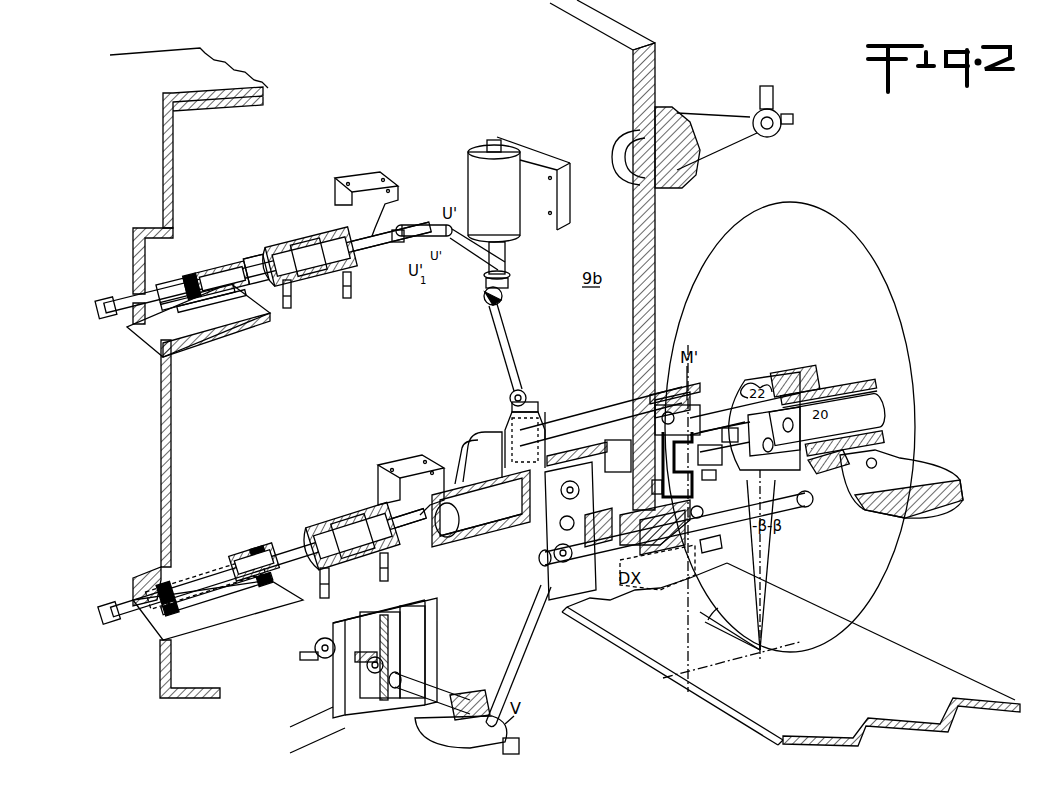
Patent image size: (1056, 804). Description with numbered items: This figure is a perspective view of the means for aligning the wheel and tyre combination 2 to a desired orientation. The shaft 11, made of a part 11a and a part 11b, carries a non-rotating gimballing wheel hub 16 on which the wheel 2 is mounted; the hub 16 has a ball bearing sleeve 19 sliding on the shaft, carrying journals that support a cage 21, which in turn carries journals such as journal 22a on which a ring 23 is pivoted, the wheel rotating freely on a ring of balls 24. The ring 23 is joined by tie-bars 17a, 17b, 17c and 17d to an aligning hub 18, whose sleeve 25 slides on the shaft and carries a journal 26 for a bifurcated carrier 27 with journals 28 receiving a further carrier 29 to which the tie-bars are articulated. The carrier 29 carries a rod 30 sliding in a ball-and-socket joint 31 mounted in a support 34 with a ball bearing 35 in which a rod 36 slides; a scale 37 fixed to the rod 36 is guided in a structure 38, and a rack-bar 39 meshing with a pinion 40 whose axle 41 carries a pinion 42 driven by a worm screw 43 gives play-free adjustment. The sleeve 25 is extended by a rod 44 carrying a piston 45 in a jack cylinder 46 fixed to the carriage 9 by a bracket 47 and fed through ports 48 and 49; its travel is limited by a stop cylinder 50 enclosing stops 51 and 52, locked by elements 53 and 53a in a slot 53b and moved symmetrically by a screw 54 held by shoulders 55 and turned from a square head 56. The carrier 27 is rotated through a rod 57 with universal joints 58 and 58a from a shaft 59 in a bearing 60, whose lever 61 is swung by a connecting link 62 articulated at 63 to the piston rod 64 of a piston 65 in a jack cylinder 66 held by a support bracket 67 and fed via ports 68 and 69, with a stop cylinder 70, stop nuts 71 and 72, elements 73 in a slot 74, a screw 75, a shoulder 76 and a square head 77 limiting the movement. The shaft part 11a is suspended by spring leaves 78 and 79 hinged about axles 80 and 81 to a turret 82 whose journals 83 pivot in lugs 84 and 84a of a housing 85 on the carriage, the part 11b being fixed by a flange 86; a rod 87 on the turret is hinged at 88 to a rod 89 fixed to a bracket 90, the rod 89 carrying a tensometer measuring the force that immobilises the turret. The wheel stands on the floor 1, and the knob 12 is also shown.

The floor 1 is at (922, 672).
The wheel and tyre combination 2 is at (892, 574).
The carriage 9 is at (172, 424).
The shaft 11 is at (455, 545).
The shaft part 11a is at (872, 400).
The shaft part 11b is at (577, 447).
The knob 12 is at (672, 160).
The wheel hub 16 is at (800, 362).
The rod or tie-bar 17a is at (588, 418).
The rod or tie-bar 17b is at (615, 452).
The rod or tie-bar 17c is at (660, 588).
The rod or tie-bar 17d is at (598, 518).
The aligning hub 18 is at (462, 470).
The ball bearing sleeve 19 is at (870, 370).
The cage 21 is at (884, 428).
The journal 22a is at (870, 448).
The ring 23 is at (834, 368).
The ring of balls 24 is at (866, 462).
The ball bearing sleeve 25 is at (482, 545).
The journal 26 is at (508, 440).
The bifurcated carrier 27 is at (540, 440).
The journal 28 is at (565, 521).
The bifurcated carrier 29 is at (560, 585).
The rod 30 is at (500, 636).
The ball-and-socket joint 31 is at (517, 745).
The support 34 is at (440, 727).
The ball bearing 35 is at (466, 698).
The rod 36 is at (420, 688).
The scale 37 is at (405, 655).
The structure 38 is at (425, 614).
The rack-bar 39 is at (392, 648).
The pinion 40 is at (376, 675).
The axle 41 is at (360, 666).
The pinion 42 is at (345, 658).
The worm screw 43 is at (350, 625).
The rod 44 is at (375, 520).
The piston 45 is at (345, 525).
The jack cylinder 46 is at (318, 530).
The bracket 47 is at (400, 463).
The port 48 is at (329, 587).
The port 49 is at (388, 580).
The stop cylinder 50 is at (268, 548).
The abutment stop 51 is at (262, 555).
The abutment stop 52 is at (172, 582).
The element 53 is at (170, 610).
The element 53a is at (260, 588).
The slot 53b is at (228, 606).
The supporting screw 54 is at (210, 578).
The shoulders 55 is at (123, 542).
The square head 56 is at (105, 604).
The rod 57 is at (508, 357).
The universal drive joint 58 is at (527, 398).
The universal drive joint 58a is at (488, 302).
The shaft 59 is at (508, 283).
The bearing 60 is at (503, 205).
The lever 61 is at (470, 252).
The connecting link 62 is at (425, 226).
The articulation 63 is at (398, 242).
The piston rod 64 is at (362, 250).
The piston 65 is at (318, 243).
The jack cylinder 66 is at (290, 243).
The support bracket 67 is at (348, 185).
The port 68 is at (290, 305).
The port 69 is at (350, 298).
The stop cylinder 70 is at (242, 260).
The stop nut 71 is at (208, 262).
The stop nut 72 is at (180, 268).
The element 73 is at (183, 305).
The slot 74 is at (235, 300).
The screw 75 is at (165, 298).
The double stop shoulder 76 is at (125, 306).
The square head 77 is at (106, 318).
The spring leaf 78 is at (748, 398).
The spring leaf 79 is at (745, 466).
The axle 80 is at (698, 459).
The axle 81 is at (654, 476).
The turret 82 is at (708, 432).
The journals 83 is at (660, 400).
The lug 84 is at (690, 422).
The lug 84a is at (698, 550).
The housing 85 is at (668, 412).
The flange 86 is at (623, 463).
The rod 87 is at (751, 565).
The hinge 88 is at (805, 507).
The rod 89 is at (702, 515).
The bracket 90 is at (640, 540).